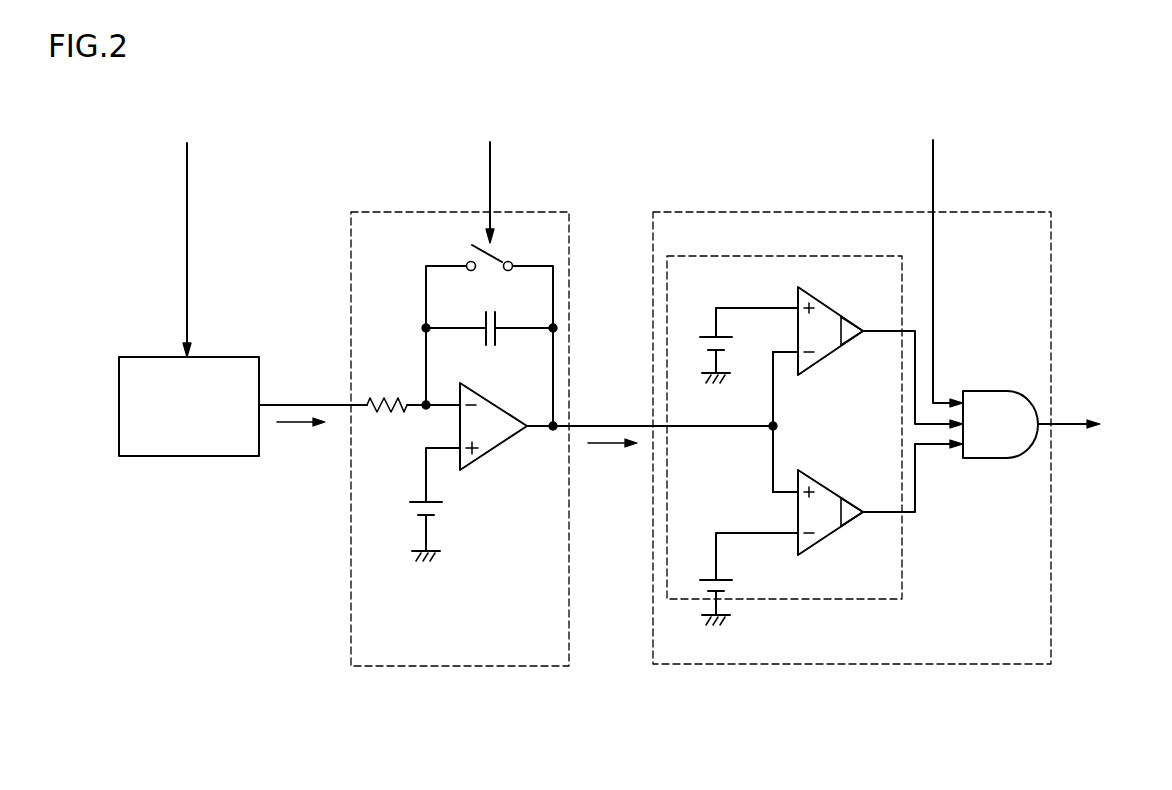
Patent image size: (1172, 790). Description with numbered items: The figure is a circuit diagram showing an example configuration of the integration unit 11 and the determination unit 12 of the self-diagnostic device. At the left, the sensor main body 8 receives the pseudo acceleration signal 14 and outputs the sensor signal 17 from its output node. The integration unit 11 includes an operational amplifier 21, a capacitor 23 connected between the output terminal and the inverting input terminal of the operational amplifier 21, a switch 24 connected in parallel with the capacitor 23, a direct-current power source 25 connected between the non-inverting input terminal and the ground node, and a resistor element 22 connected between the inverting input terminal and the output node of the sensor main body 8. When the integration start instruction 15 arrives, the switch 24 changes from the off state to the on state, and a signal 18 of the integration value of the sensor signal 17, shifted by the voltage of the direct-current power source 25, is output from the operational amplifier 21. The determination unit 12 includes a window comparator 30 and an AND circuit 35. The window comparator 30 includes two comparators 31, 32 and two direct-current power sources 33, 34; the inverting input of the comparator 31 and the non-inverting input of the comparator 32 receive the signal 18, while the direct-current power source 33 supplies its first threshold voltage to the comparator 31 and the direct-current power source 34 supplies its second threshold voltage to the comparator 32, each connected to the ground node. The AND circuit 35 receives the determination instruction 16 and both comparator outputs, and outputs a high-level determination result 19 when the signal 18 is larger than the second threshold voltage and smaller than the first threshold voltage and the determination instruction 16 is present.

The sensor main body 8 is at (195, 457).
The integration unit 11 is at (522, 668).
The determination unit 12 is at (1005, 665).
The pseudo acceleration signal 14 is at (187, 235).
The integration start instruction 15 is at (489, 177).
The determination instruction 16 is at (943, 258).
The sensor signal 17 is at (296, 423).
The signal of an integration value 18 is at (605, 446).
The determination result 19 is at (1085, 425).
The operational amplifier 21 is at (490, 450).
The resistor element 22 is at (388, 392).
The capacitor 23 is at (491, 348).
The switch 24 is at (488, 272).
The direct-current power source 25 is at (442, 509).
The window comparator 30 is at (797, 256).
The comparator 31 is at (826, 357).
The comparator 32 is at (826, 537).
The direct-current power source 33 is at (707, 335).
The direct-current power source 34 is at (707, 578).
The AND circuit 35 is at (989, 459).